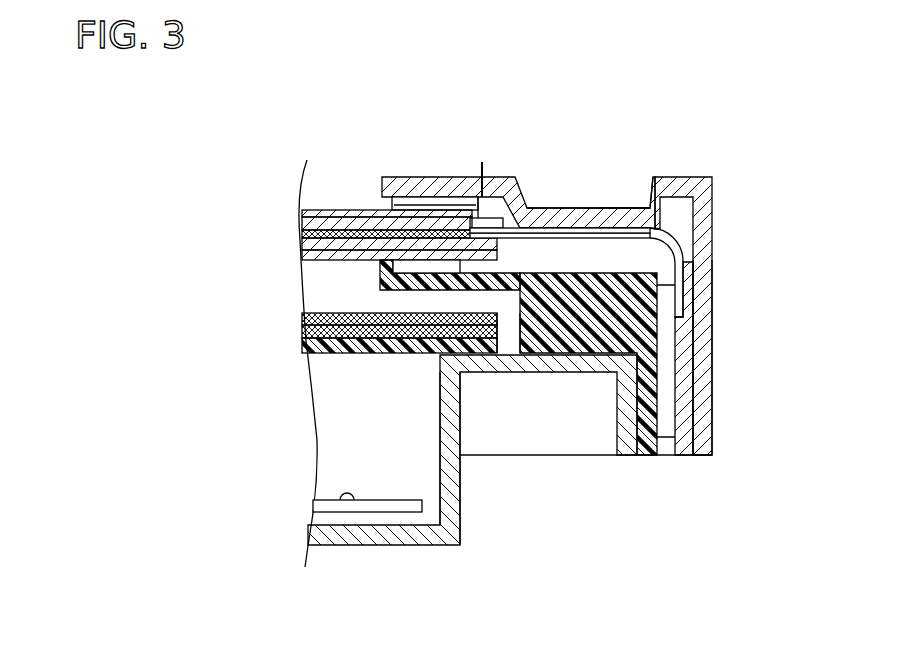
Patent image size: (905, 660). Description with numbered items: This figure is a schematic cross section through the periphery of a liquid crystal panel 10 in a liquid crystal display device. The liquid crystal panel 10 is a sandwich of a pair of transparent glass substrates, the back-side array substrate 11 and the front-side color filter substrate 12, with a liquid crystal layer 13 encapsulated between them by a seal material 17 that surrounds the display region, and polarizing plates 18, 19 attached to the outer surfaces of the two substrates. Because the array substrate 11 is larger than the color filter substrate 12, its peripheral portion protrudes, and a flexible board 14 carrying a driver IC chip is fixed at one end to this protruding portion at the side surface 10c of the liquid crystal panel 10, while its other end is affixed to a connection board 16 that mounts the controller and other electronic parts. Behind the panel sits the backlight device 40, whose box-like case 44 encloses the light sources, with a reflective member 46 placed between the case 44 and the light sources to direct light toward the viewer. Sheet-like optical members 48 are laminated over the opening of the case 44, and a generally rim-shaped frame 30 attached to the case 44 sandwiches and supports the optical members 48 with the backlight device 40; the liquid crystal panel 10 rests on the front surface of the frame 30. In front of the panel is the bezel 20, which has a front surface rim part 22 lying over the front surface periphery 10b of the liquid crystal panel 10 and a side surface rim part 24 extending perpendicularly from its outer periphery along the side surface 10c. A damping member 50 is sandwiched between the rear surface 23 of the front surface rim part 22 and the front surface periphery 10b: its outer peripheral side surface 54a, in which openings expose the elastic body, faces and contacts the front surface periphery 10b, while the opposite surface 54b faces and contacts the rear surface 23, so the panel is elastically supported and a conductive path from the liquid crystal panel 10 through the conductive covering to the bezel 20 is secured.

The liquid crystal panel 10 is at (414, 169).
The front surface periphery 10b is at (505, 238).
The side surface 10c is at (612, 268).
The array substrate 11 is at (300, 244).
The color filter substrate 12 is at (300, 222).
The liquid crystal layer 13 is at (300, 233).
The flexible board 14 is at (673, 265).
The connection board 16 is at (667, 368).
The seal material 17 is at (537, 213).
The polarizing plate 18 is at (300, 255).
The polarizing plate 19 is at (298, 212).
The bezel 20 is at (716, 178).
The front surface rim part 22 is at (440, 177).
The rear surface 23 is at (478, 212).
The side surface rim part 24 is at (712, 415).
The frame 30 is at (630, 198).
The backlight device 40 is at (510, 489).
The case 44 is at (474, 548).
The reflective member 46 is at (355, 500).
The optical members 48 is at (290, 310).
The damping member 50 is at (387, 207).
The outer peripheral side surface 54a is at (380, 270).
The outer peripheral side surface 54b is at (413, 207).